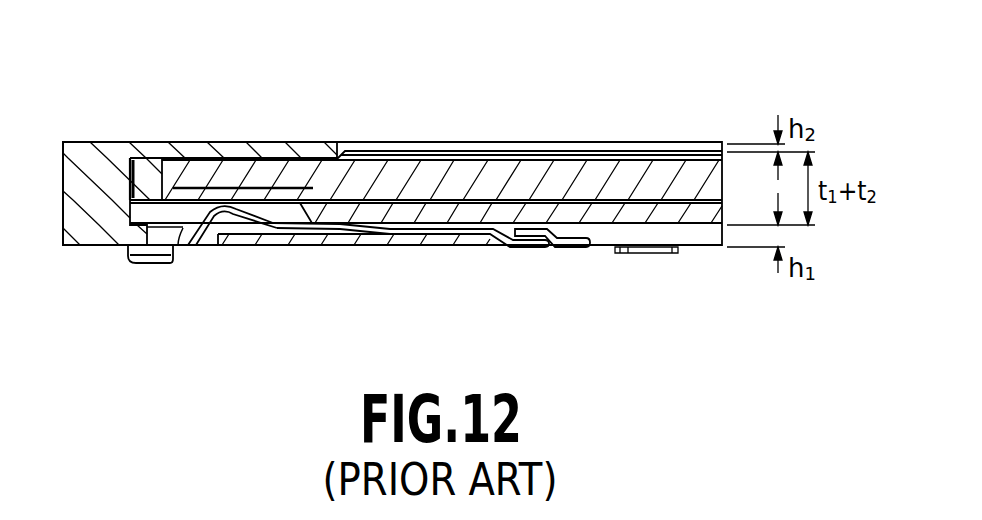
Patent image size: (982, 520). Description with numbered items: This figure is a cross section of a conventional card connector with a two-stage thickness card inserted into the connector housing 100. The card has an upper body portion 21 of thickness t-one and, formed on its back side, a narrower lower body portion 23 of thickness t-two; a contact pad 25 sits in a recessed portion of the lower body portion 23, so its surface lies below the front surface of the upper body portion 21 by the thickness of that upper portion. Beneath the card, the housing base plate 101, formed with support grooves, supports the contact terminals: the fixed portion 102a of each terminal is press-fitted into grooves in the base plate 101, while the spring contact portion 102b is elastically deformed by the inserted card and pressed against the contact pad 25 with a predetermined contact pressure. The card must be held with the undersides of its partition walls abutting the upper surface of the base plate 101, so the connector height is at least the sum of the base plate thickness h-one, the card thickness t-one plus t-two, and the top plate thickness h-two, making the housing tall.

The connector housing 100 is at (97, 118).
The contact pad 25 is at (229, 140).
The upper body portion 21 is at (613, 170).
The lower body portion 23 is at (608, 212).
The base plate 101 is at (177, 247).
The spring contact portion 102b is at (260, 243).
The fixed portion 102a is at (433, 247).